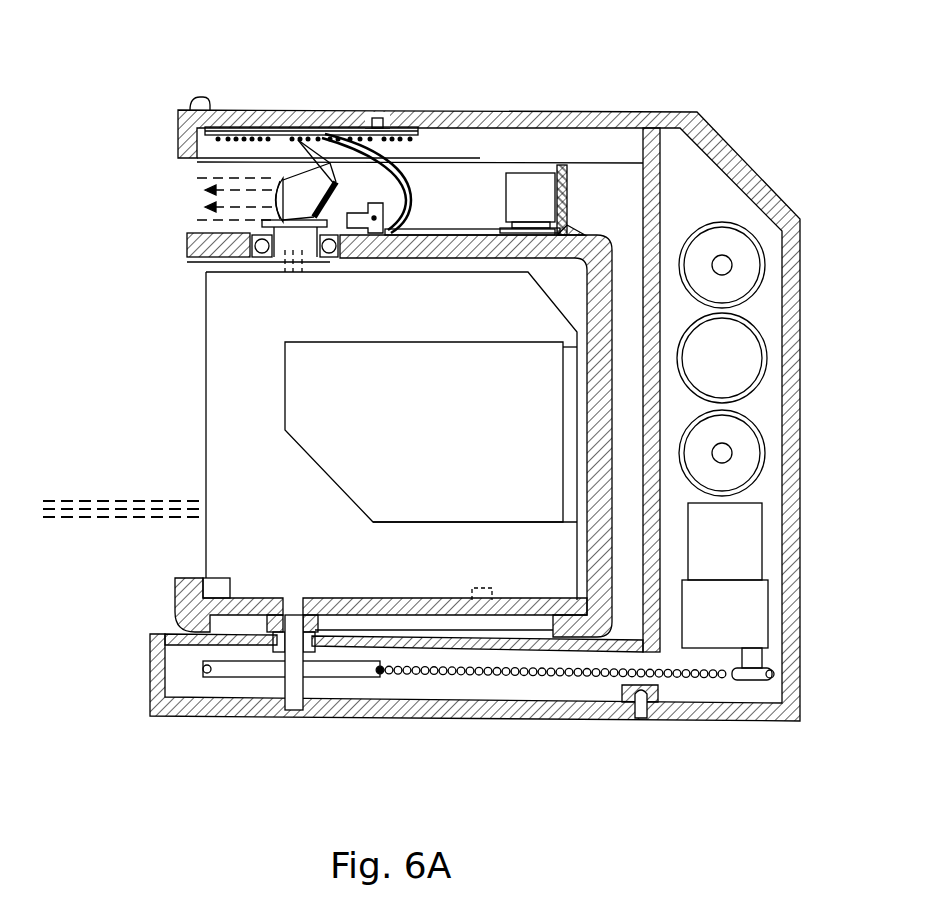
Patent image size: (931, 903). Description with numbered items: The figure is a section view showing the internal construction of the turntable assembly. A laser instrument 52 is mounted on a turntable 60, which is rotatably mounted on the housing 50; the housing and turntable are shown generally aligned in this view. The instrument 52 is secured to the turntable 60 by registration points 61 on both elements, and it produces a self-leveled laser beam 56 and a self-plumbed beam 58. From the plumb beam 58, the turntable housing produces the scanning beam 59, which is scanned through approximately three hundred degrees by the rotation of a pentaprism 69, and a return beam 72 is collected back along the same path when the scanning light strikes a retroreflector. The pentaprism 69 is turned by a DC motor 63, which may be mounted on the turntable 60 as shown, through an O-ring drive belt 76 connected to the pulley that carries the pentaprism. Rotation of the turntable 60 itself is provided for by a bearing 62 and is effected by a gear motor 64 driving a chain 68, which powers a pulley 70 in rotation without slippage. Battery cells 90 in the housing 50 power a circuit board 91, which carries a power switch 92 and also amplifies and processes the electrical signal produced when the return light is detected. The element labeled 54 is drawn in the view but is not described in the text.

The housing 50 is at (700, 75).
The laser instrument 52 is at (205, 433).
The housing 54 is at (178, 140).
The self-leveled laser beam 56 is at (138, 500).
The self-plumbed beam 58 is at (287, 262).
The scanning beam 59 is at (192, 177).
The turntable 60 is at (187, 243).
The registration points 61 is at (220, 578).
The bearing 62 is at (266, 634).
The DC motor 63 is at (542, 173).
The gear motor 64 is at (768, 580).
The chain 68 is at (462, 672).
The pentaprism 69 is at (297, 140).
The pulley 70 is at (315, 680).
The return beam 72 is at (191, 218).
The O-ring drive belt 76 is at (418, 236).
The battery cells 90 is at (765, 263).
The circuit board 91 is at (172, 85).
The power switch 92 is at (380, 118).